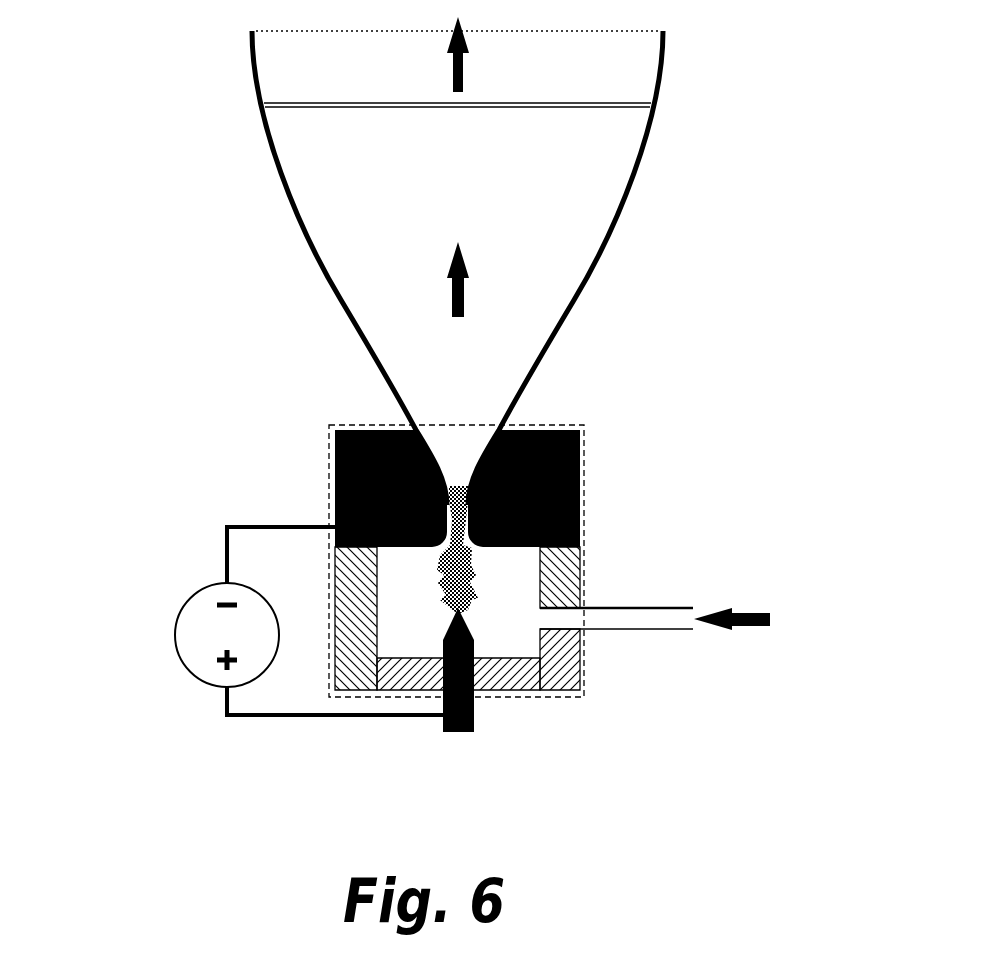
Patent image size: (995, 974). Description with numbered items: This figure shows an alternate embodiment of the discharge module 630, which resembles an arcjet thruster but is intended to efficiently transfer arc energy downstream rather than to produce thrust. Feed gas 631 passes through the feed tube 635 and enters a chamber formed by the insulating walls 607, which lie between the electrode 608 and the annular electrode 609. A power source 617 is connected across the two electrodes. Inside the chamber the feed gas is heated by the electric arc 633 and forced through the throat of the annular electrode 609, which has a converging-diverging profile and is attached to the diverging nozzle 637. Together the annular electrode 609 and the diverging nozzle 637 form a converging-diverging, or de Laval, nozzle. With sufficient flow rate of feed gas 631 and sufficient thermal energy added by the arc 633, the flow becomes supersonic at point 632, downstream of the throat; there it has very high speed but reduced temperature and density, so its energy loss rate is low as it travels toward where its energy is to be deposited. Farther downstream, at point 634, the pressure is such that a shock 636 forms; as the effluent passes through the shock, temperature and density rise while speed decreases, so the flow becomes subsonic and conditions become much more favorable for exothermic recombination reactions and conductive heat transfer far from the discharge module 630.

The insulating walls 607 is at (560, 660).
The electrode 608 is at (462, 740).
The annular electrode 609 is at (333, 465).
The power supply 617 is at (172, 640).
The discharge module 630 is at (583, 425).
The feed gas 631 is at (741, 645).
The supersonic flow point 632 is at (468, 300).
The electric arc 633 is at (472, 578).
The subsonic flow point 634 is at (468, 67).
The feed tube 635 is at (632, 618).
The shock 636 is at (582, 117).
The diverging nozzle 637 is at (623, 215).